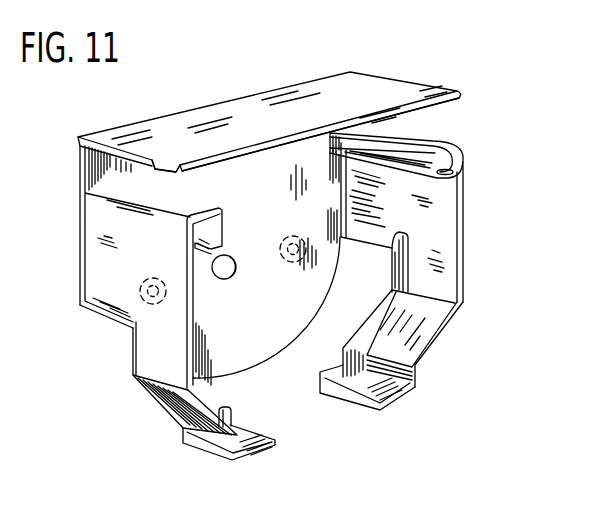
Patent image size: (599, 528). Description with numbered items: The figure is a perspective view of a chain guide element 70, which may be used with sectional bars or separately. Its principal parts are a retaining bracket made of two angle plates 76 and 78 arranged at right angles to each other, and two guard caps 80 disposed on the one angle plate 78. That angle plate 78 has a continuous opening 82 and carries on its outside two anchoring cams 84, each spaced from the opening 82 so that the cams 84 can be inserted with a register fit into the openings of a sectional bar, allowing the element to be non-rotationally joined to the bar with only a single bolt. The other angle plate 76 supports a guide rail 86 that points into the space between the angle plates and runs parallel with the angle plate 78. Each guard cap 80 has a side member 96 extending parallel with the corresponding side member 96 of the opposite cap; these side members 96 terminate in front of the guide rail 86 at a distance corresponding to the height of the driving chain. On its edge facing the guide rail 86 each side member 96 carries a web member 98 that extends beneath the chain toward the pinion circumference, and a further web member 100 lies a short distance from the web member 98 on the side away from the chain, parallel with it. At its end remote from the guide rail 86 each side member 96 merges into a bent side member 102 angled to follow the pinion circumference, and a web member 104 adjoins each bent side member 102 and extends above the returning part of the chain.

The chain guide element 70 is at (73, 267).
The angle plate 76 is at (332, 96).
The angle plate 78 is at (263, 344).
The guard cap 80 is at (160, 322).
The continuous opening 82 is at (221, 277).
The anchoring cam 84 is at (293, 254).
The guide rail 86 is at (160, 160).
The side member 96 is at (185, 367).
The web member 98 is at (218, 212).
The web member 100 is at (210, 245).
The bent side member 102 is at (190, 415).
The web member 104 is at (262, 453).